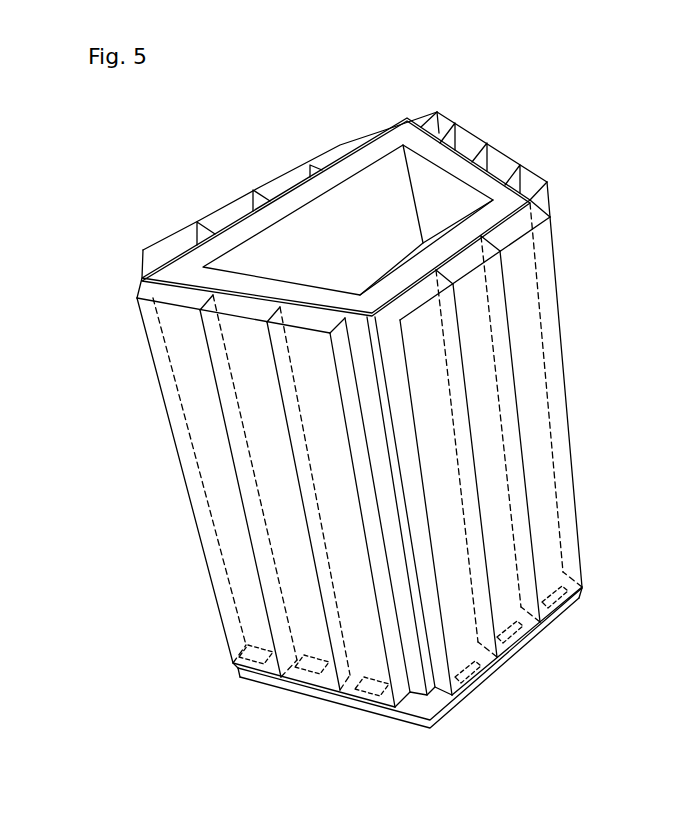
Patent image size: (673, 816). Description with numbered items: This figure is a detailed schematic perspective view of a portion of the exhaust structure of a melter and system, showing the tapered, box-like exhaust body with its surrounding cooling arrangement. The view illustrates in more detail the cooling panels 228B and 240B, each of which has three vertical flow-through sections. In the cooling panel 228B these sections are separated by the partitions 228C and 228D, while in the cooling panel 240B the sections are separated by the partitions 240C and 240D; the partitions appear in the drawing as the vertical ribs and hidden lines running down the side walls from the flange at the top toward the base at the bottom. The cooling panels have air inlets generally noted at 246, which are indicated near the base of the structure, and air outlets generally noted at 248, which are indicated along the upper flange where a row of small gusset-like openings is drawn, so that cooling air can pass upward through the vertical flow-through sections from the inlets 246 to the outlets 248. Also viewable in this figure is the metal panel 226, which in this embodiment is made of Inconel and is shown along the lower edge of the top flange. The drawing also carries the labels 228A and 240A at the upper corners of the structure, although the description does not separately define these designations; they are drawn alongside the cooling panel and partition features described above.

The metal panel 226 is at (133, 303).
The flange corner wall 228A is at (537, 198).
The cooling panel 228B is at (232, 556).
The partition 228C is at (282, 627).
The partition 228D is at (336, 700).
The corner rib 240A is at (140, 262).
The cooling panel 240B is at (490, 460).
The partition 240C is at (473, 510).
The partition 240D is at (507, 421).
The air inlets 246 is at (252, 662).
The air outlets 248 is at (343, 142).